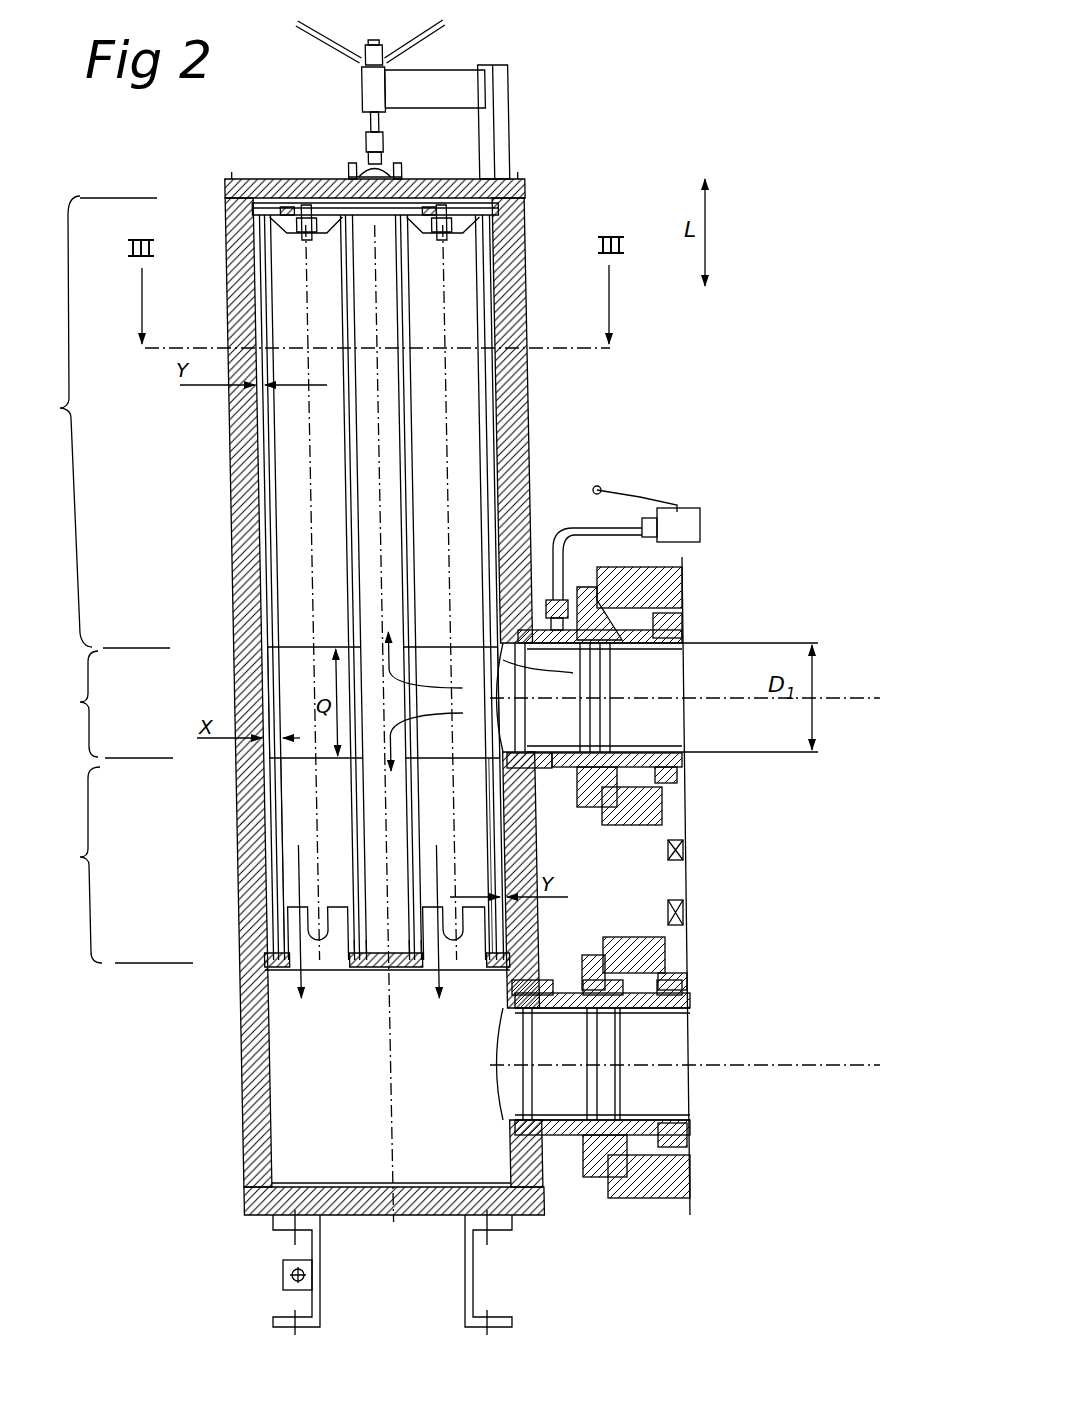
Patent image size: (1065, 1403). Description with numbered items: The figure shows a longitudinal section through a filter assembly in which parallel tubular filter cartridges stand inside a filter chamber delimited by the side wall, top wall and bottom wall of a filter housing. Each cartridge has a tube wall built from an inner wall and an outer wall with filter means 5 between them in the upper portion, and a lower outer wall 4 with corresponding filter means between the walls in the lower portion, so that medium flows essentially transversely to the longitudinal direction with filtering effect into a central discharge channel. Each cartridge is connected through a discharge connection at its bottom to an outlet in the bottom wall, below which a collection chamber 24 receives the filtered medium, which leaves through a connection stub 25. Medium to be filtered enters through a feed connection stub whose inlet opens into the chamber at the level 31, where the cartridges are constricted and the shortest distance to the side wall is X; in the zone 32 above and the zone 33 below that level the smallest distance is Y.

The outer wall 4 is at (270, 783).
The filter means 5 is at (276, 612).
The collection chamber 24 is at (358, 1165).
The connection stub 25 is at (660, 1100).
The level 31 is at (111, 704).
The zone 32 is at (98, 422).
The zone 33 is at (122, 865).